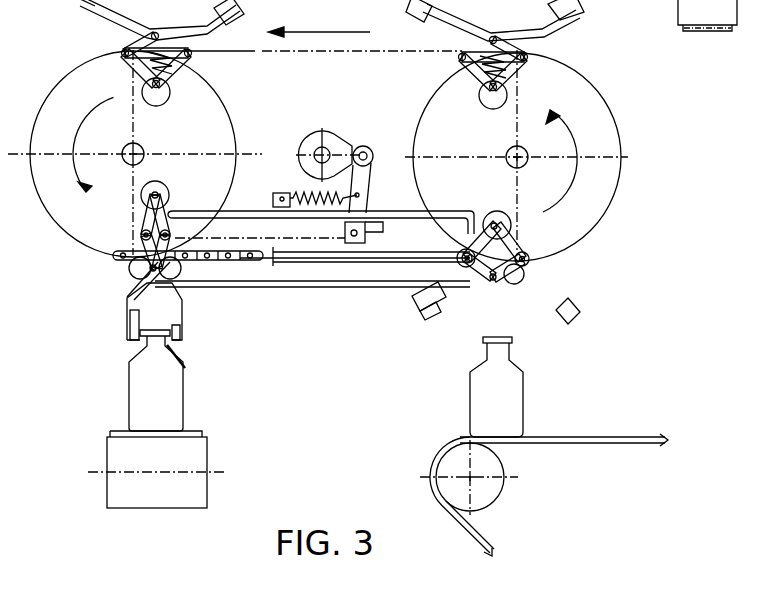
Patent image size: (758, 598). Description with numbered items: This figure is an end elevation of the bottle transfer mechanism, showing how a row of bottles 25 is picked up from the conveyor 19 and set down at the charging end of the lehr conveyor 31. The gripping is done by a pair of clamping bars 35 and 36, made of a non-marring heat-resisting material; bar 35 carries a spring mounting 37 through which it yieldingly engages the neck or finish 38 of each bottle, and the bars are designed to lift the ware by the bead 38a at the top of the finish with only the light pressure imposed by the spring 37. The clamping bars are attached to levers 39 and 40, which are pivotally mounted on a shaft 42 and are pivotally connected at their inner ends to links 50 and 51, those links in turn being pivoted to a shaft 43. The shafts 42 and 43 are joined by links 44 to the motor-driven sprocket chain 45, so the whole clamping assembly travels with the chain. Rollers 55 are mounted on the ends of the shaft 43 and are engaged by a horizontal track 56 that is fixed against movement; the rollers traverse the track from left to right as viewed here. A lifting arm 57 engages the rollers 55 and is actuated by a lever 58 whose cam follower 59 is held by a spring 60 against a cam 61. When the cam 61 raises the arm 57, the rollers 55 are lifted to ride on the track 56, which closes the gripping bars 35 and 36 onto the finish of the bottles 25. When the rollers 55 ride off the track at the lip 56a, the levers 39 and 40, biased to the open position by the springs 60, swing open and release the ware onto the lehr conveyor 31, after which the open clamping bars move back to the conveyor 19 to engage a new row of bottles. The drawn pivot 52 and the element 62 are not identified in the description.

The conveyor 19 is at (196, 465).
The bottles 25 is at (184, 400).
The lehr conveyor 31 is at (588, 437).
The clamping bar 35 is at (142, 340).
The clamping bar 36 is at (180, 336).
The spring mounting 37 is at (212, 25).
The neck or finish 38 is at (143, 345).
The bead 38a is at (186, 368).
The lever 39 is at (133, 298).
The lever 40 is at (183, 310).
The shaft 42 is at (495, 284).
The shaft 43 is at (493, 223).
The links 44 is at (135, 262).
The sprocket chain 45 is at (291, 266).
The link 50 is at (135, 153).
The link 51 is at (175, 213).
The toggle pivot 52 is at (141, 233).
The rollers 55 is at (165, 188).
The horizontal track 56 is at (422, 222).
The lip 56a is at (372, 180).
The lifting arm 57 is at (336, 236).
The lever 58 is at (368, 195).
The cam follower 59 is at (371, 148).
The spring 60 is at (290, 190).
The cam 61 is at (352, 143).
The toggle spring pivot 62 is at (520, 66).